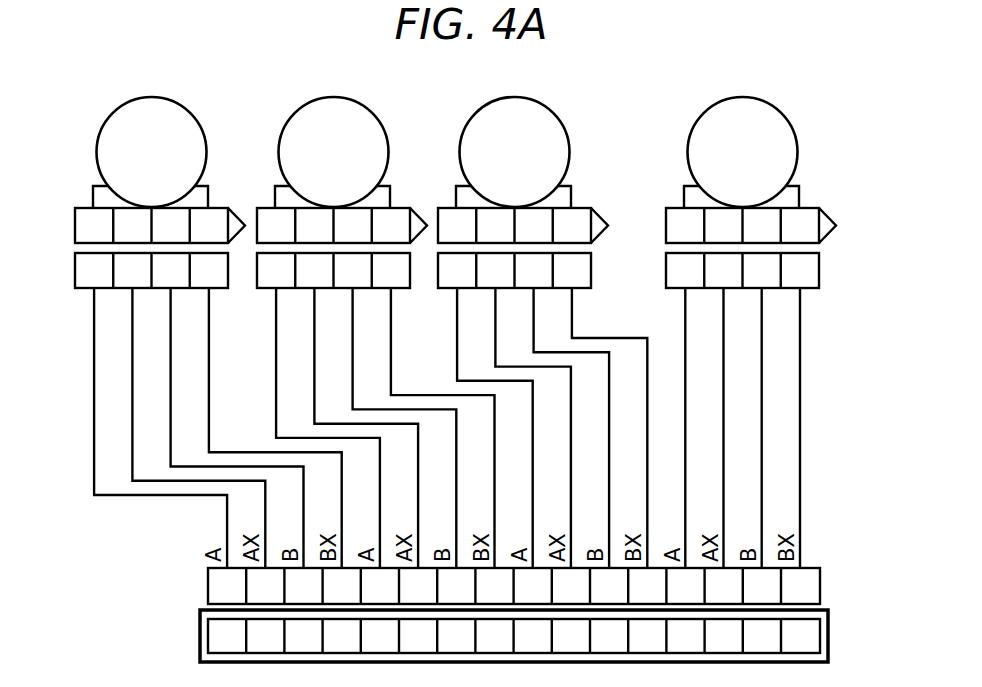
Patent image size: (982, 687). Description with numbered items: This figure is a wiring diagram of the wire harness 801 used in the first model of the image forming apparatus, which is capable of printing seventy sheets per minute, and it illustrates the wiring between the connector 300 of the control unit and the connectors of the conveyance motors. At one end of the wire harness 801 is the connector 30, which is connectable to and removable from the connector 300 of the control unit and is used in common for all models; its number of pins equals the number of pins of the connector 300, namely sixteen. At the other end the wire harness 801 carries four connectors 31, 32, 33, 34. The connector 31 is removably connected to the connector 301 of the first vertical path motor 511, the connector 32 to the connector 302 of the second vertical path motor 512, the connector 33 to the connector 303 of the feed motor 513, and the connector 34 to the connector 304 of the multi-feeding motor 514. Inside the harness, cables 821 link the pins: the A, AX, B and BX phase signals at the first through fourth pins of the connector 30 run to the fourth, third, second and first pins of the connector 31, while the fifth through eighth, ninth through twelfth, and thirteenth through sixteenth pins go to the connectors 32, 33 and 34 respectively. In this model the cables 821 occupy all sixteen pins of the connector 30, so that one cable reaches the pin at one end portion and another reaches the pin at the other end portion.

The connector 30 is at (208, 593).
The connector of the control unit 300 is at (828, 636).
The connector of the first vertical path motor 301 is at (83, 207).
The connector of the second vertical path motor 302 is at (265, 207).
The connector of the feed motor 303 is at (446, 207).
The connector of the multi-feeding motor 304 is at (674, 207).
The connector 31 is at (82, 289).
The connector 32 is at (264, 289).
The connector 33 is at (445, 289).
The connector 34 is at (673, 289).
The first vertical path motor 511 is at (147, 98).
The second vertical path motor 512 is at (329, 98).
The feed motor 513 is at (510, 98).
The multi-feeding motor 514 is at (738, 98).
The wire harness 801 is at (825, 406).
The cable 821 is at (92, 397).